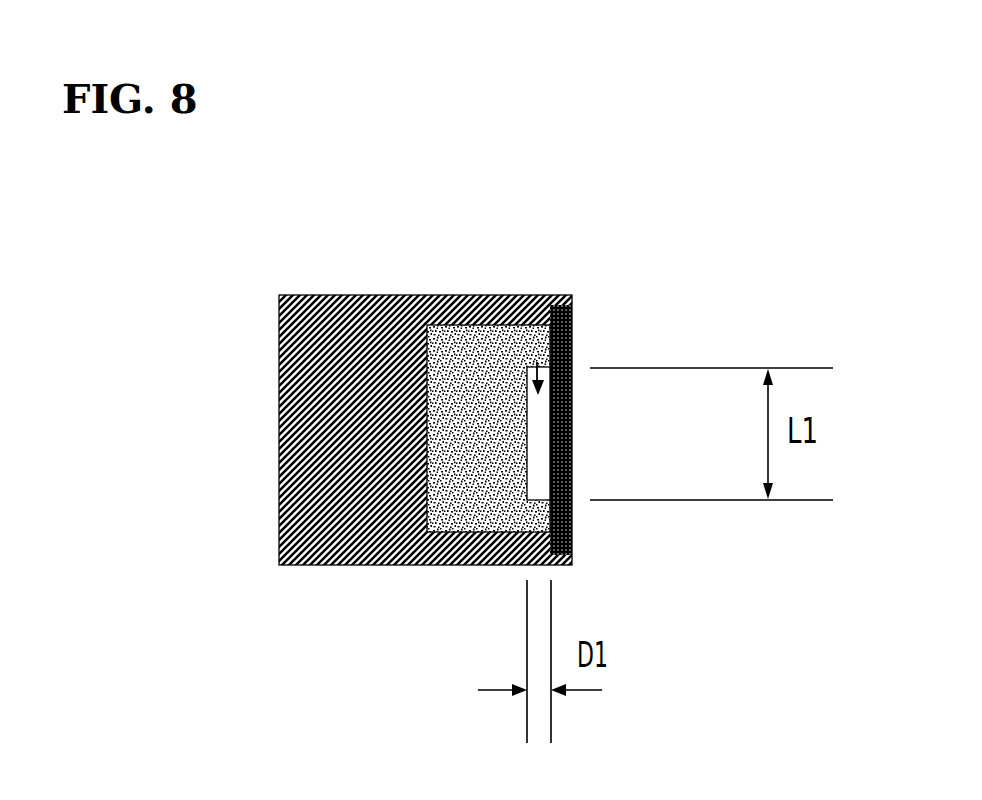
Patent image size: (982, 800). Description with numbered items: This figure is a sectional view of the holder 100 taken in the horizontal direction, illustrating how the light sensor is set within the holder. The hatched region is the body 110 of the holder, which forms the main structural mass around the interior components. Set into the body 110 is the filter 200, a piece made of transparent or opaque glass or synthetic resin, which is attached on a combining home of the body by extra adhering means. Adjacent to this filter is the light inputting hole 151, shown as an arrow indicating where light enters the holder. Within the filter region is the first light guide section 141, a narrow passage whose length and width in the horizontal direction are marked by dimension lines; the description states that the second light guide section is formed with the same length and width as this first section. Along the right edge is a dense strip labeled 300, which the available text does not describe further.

The holder 100 is at (240, 427).
The body 110 is at (355, 312).
The filter 200 is at (478, 362).
The light inputting hole 151 is at (537, 365).
The cover layer 300 is at (573, 343).
The first light guide section 141 is at (573, 436).